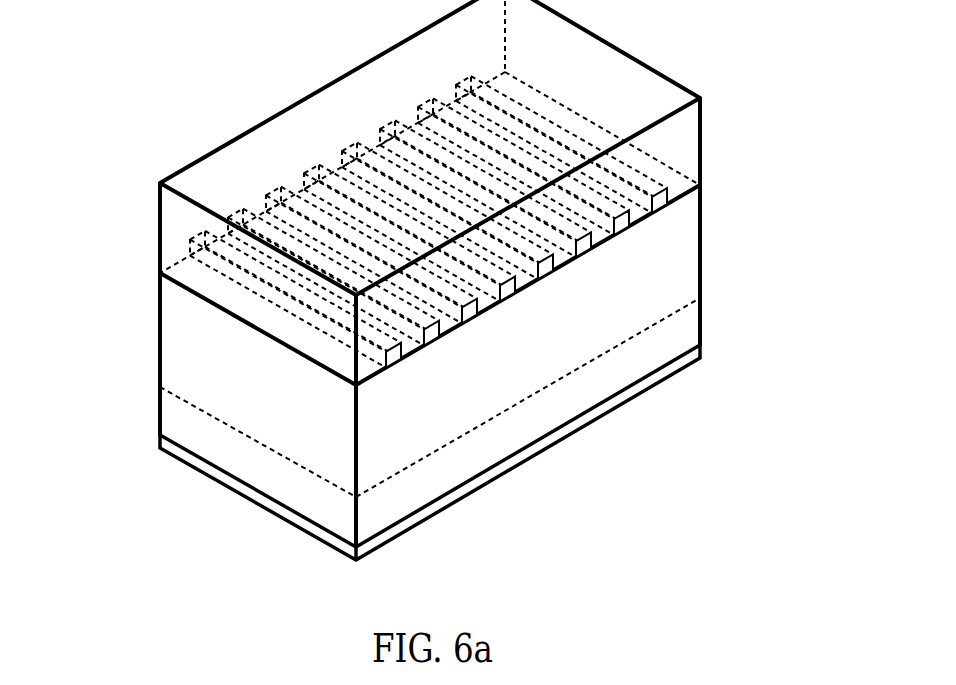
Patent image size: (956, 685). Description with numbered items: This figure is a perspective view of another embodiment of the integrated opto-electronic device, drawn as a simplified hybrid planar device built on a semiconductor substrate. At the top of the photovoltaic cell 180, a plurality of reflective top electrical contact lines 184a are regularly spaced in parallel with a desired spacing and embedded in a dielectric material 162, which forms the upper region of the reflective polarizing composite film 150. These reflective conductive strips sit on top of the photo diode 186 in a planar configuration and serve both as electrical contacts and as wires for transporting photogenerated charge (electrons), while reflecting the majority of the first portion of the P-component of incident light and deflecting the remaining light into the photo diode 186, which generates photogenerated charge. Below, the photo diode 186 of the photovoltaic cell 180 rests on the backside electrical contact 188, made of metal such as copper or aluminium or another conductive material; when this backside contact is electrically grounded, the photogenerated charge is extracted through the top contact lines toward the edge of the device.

The reflective polarizing composite film 150 is at (720, 98).
The dielectric material 162 is at (173, 242).
The photovoltaic cell 180 is at (707, 167).
The reflective top electrical contact lines 184a is at (541, 268).
The photo diode 186 is at (151, 267).
The backside electrical contact 188 is at (692, 368).